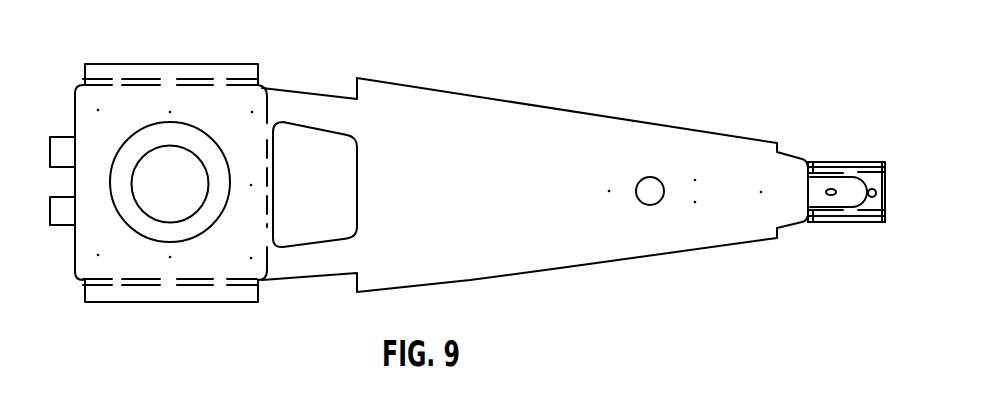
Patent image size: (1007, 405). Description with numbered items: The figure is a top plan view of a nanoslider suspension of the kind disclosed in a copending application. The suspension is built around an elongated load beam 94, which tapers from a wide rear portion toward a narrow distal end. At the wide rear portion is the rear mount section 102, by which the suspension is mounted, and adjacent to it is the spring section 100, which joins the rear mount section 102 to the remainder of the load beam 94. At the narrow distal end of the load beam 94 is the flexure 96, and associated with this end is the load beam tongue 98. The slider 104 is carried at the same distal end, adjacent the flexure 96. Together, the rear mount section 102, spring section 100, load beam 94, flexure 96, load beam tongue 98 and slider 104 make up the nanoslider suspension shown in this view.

The load beam 94 is at (532, 107).
The flexure 96 is at (830, 157).
The load beam tongue 98 is at (830, 195).
The spring section 100 is at (300, 85).
The rear mount section 102 is at (215, 58).
The slider 104 is at (858, 225).